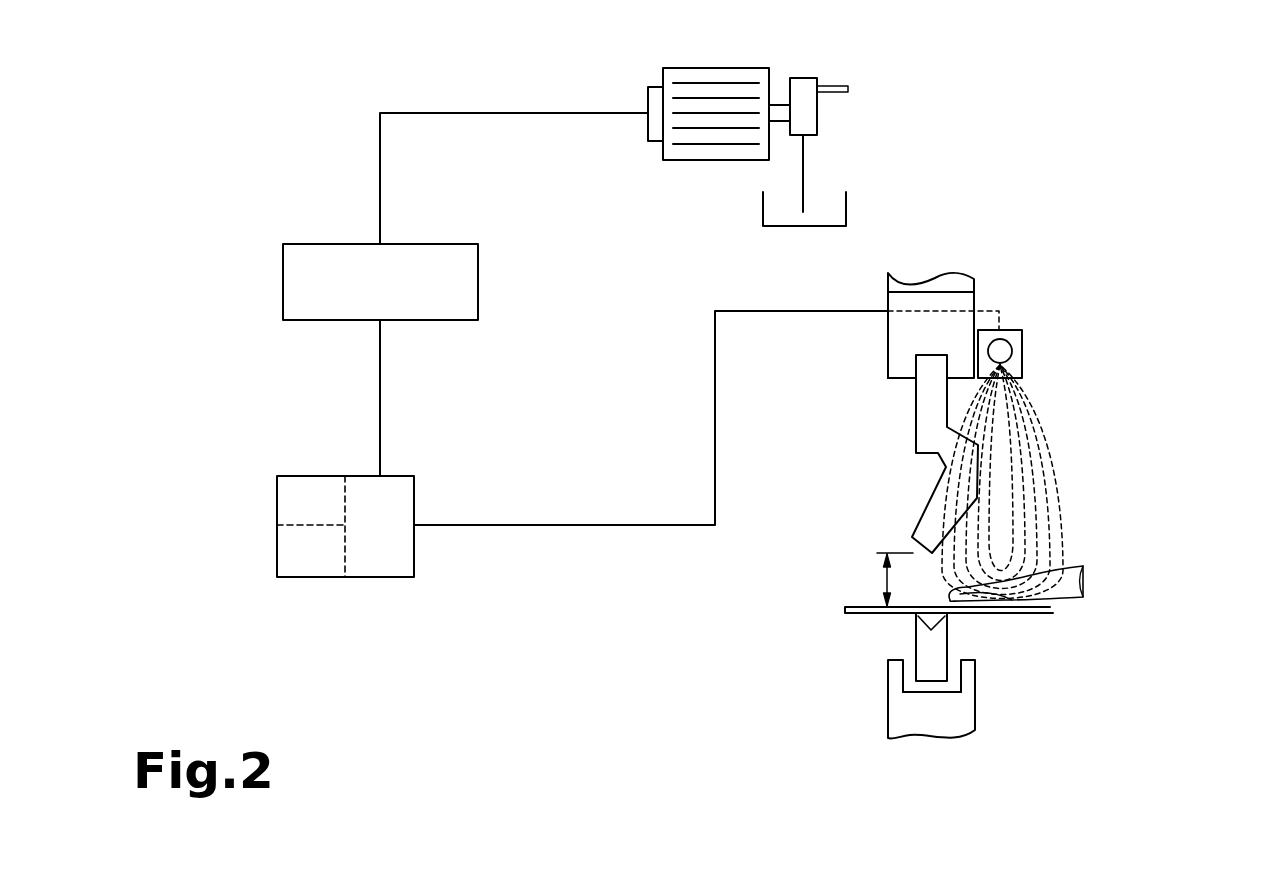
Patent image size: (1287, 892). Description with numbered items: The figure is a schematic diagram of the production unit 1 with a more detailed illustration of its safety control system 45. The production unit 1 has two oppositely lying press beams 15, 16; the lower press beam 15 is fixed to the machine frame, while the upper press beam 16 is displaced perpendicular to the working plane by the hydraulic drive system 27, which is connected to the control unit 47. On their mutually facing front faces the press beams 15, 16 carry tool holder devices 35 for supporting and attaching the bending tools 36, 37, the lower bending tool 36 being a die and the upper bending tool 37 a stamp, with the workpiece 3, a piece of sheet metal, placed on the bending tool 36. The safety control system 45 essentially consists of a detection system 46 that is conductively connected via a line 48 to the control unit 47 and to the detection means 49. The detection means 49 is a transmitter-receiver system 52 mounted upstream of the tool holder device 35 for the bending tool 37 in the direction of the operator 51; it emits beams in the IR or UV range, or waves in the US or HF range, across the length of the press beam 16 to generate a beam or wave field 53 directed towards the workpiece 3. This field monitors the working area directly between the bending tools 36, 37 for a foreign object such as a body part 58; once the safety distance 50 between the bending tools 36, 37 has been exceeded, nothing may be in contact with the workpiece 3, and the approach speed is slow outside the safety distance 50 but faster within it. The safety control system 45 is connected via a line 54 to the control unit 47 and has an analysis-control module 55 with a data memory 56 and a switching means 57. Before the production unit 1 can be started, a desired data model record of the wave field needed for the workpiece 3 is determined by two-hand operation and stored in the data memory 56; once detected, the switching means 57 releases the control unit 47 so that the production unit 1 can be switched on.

The production unit 1 is at (1117, 385).
The workpiece 3 is at (845, 610).
The press beam 15 is at (955, 715).
The press beam 16 is at (948, 282).
The drive system 27 is at (880, 90).
The tool holder device 35 is at (888, 340).
The bending tool 36 is at (922, 642).
The bending tool 37 is at (927, 455).
The safety control system 45 is at (407, 460).
The detection system 46 is at (1117, 252).
The control unit 47 is at (295, 294).
The line 48 is at (582, 525).
The detection means 49 is at (1003, 352).
The safety distance 50 is at (884, 580).
The operator 51 is at (1270, 623).
The transmitter-receiver system 52 is at (1028, 313).
The beam or wave field 53 is at (1047, 468).
The line 54 is at (380, 405).
The analysis-control module 55 is at (368, 510).
The data memory 56 is at (300, 499).
The switching means 57 is at (302, 550).
The body part 58 is at (1073, 587).